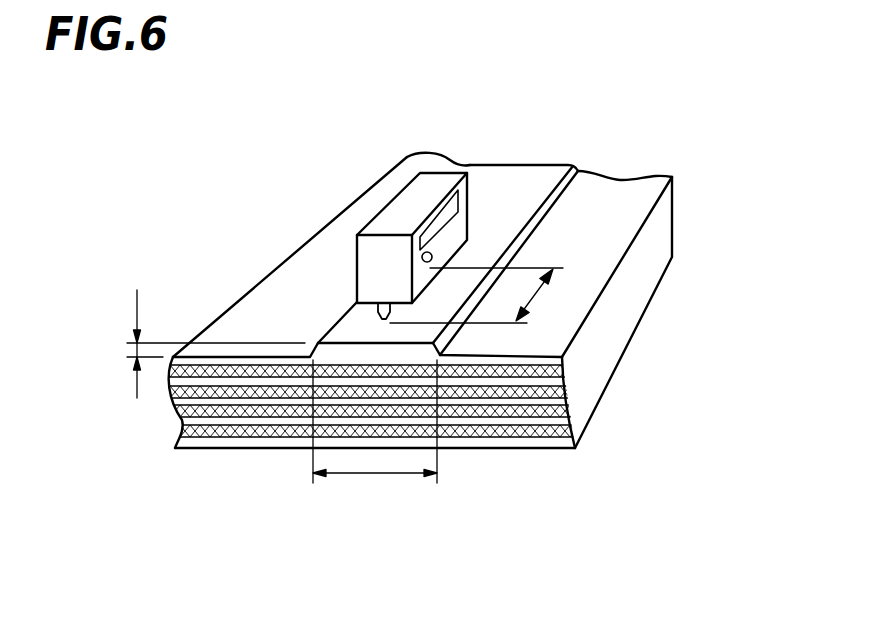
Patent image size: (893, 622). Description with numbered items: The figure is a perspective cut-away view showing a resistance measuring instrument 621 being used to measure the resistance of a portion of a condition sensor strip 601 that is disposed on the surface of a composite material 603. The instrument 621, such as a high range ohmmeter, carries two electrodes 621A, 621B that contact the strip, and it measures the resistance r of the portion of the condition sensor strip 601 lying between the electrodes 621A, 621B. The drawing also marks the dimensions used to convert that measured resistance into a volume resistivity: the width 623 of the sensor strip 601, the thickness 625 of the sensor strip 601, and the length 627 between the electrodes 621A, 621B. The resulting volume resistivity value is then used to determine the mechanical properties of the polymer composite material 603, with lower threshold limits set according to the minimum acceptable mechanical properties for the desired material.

The condition sensor strip 601 is at (542, 163).
The composite material 603 is at (603, 398).
The resistance measuring instrument 621 is at (350, 227).
The electrode 621A is at (383, 322).
The electrode 621B is at (435, 251).
The width 623 is at (373, 473).
The thickness 625 is at (130, 348).
The length 627 is at (533, 293).